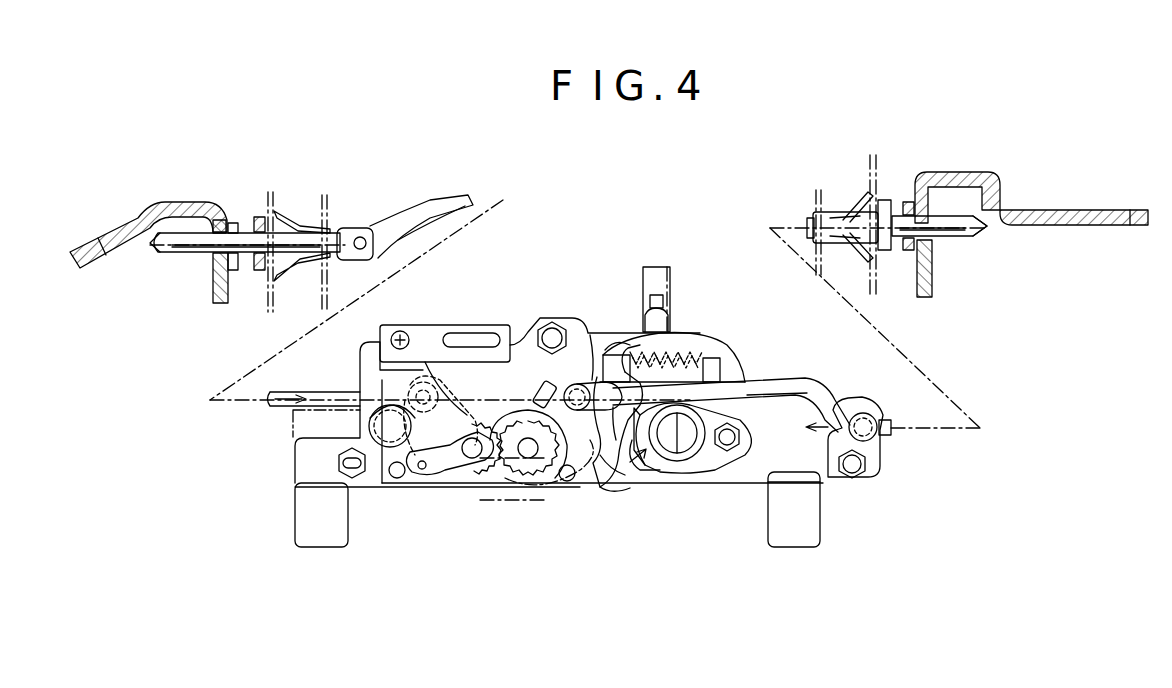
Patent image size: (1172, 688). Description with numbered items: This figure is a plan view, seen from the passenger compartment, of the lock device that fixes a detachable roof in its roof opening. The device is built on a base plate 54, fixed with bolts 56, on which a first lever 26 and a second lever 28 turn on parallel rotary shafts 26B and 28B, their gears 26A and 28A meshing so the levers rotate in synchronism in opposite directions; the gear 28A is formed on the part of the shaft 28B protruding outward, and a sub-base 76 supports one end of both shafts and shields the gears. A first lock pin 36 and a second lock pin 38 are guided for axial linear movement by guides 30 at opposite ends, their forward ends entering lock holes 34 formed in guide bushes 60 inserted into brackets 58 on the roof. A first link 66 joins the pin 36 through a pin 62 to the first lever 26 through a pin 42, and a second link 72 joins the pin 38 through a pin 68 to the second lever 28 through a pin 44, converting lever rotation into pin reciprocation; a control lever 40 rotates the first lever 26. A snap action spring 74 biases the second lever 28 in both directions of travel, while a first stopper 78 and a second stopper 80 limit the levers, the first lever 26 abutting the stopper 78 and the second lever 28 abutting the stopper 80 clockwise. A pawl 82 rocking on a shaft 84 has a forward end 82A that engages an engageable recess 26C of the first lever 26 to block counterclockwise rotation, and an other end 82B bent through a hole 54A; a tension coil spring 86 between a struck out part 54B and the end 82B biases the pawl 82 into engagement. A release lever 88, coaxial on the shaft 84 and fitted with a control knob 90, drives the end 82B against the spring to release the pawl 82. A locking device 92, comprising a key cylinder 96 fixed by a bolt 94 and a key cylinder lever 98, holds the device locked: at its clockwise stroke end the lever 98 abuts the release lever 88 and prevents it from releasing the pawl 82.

The first lever 26 is at (522, 380).
The gear 26A is at (474, 458).
The rotary shaft 26B is at (530, 460).
The engageable recess 26C is at (590, 490).
The second lever 28 is at (452, 330).
The gear 28A is at (468, 400).
The rotary shaft 28B is at (425, 479).
The guides 30 is at (305, 258).
The lock holes 34 is at (243, 250).
The first lock pin 36 is at (980, 236).
The second lock pin 38 is at (175, 253).
The control lever 40 is at (282, 432).
The pin 42 is at (586, 332).
The pin 44 is at (425, 345).
The base plate 54 is at (738, 352).
The hole 54A is at (614, 354).
The struck out part 54B is at (735, 378).
The bolts 56 is at (555, 320).
The bracket 58 is at (140, 231).
The guide bush 60 is at (218, 258).
The pin 62 is at (866, 424).
The first link 66 is at (822, 386).
The pin 68 is at (360, 237).
The second link 72 is at (400, 212).
The snap action spring 74 is at (372, 424).
The sub-base 76 is at (396, 479).
The first stopper 78 is at (568, 481).
The second stopper 80 is at (548, 392).
The pawl 82 is at (655, 475).
The forward end 82A is at (613, 472).
The other end 82B is at (628, 350).
The shaft 84 is at (695, 345).
The tension coil spring 86 is at (700, 357).
The release lever 88 is at (665, 322).
The control knob 90 is at (670, 272).
The locking device 92 is at (718, 460).
The bolt 94 is at (740, 440).
The key cylinder 96 is at (703, 420).
The key cylinder lever 98 is at (660, 468).